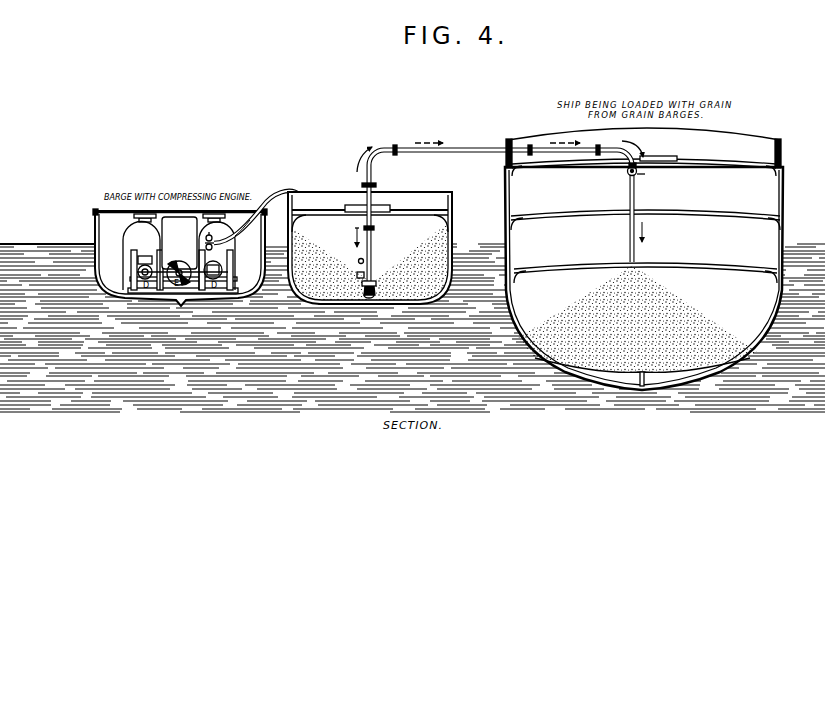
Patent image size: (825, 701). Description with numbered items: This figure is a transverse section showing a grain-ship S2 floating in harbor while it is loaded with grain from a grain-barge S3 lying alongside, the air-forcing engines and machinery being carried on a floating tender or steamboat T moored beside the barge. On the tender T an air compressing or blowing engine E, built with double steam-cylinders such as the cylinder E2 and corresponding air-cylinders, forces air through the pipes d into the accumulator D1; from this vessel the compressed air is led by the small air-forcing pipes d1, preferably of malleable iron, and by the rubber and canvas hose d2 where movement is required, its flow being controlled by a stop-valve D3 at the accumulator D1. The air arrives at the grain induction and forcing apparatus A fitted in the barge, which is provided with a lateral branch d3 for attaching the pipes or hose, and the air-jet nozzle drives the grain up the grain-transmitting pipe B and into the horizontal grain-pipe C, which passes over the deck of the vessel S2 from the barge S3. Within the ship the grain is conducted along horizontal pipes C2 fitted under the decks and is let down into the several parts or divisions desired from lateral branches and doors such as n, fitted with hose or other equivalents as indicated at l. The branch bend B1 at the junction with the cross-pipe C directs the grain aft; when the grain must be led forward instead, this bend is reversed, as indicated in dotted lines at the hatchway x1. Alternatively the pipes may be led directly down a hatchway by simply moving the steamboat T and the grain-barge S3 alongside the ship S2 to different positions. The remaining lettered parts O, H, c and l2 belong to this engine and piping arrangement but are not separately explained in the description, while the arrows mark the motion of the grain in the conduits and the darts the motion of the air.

The floating tender or steamboat T is at (180, 257).
The air compressing cylinder E2 is at (141, 252).
The air compressing or blowing engine E is at (217, 252).
The accumulator D1 is at (179, 243).
The stop-valve D3 is at (215, 241).
The fly wheel O is at (182, 266).
The compressed air pipe l2 is at (290, 211).
The air-forcing pipe d1 is at (242, 228).
The grain-barge S3 is at (370, 242).
The horizontal grain-pipe C is at (490, 211).
The pipe coupling c is at (371, 186).
The grain-transmitting pipe B is at (369, 162).
The air pipe d is at (352, 238).
The lateral branch d3 is at (356, 261).
The hose d2 is at (356, 277).
The grain induction and forcing apparatus A is at (372, 276).
The nozzle mouth H is at (373, 290).
The grain-ship S2 is at (644, 259).
The hatchway x1 is at (658, 156).
The hose l is at (629, 206).
The branch bend B1 is at (626, 147).
The lateral branch and door n is at (640, 174).
The horizontal pipe under deck C2 is at (626, 174).